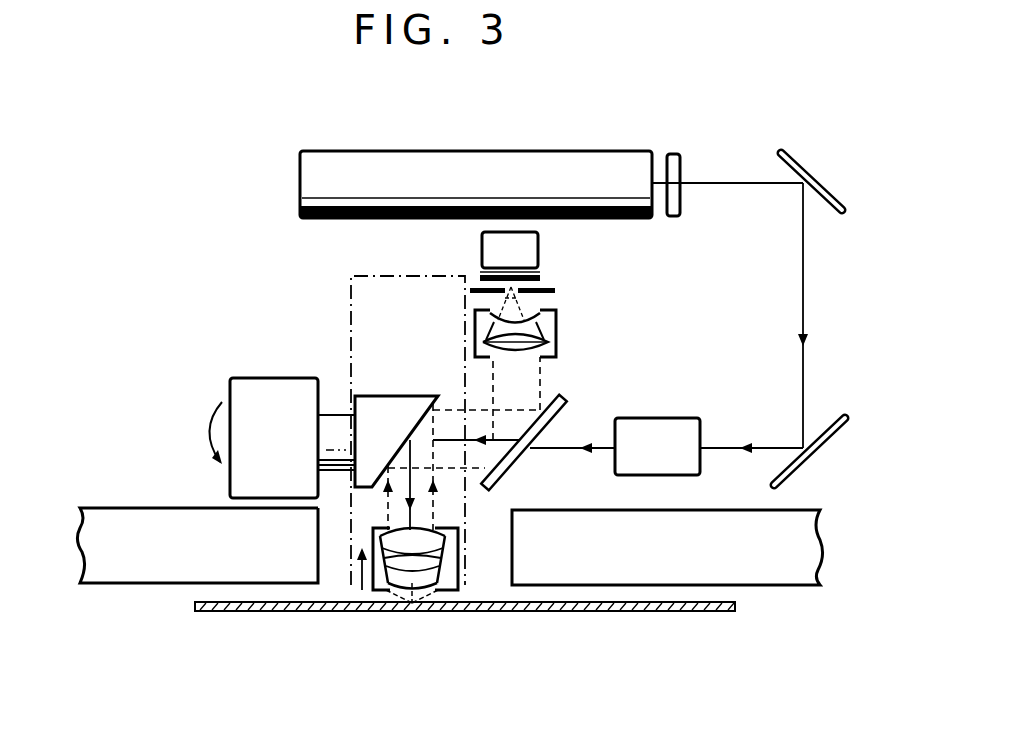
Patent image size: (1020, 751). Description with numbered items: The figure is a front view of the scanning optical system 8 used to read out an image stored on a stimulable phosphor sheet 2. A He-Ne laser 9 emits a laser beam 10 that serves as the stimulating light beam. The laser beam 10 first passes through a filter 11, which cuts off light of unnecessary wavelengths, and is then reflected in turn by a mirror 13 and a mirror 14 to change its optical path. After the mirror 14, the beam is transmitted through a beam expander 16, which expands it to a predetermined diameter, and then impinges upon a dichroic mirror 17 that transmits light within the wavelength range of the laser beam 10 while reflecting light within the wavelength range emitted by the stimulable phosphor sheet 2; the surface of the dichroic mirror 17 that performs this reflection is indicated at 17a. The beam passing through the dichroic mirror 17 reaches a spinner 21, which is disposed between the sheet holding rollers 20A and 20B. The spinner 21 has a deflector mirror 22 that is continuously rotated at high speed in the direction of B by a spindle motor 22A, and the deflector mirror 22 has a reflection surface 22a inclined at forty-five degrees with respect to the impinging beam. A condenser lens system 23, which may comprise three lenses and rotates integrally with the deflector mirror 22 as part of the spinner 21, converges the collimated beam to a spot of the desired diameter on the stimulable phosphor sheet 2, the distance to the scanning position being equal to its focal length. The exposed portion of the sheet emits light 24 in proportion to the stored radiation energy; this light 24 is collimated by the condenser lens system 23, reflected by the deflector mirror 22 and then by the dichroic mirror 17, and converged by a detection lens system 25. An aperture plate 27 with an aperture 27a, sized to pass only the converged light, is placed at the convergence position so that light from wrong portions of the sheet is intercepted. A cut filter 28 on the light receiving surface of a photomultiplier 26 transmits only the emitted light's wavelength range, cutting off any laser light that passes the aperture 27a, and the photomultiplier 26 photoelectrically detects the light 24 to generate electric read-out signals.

The stimulable phosphor sheet 2 is at (362, 613).
The scanning optical system 8 is at (272, 212).
The He-Ne laser 9 is at (477, 160).
The laser beam 10 is at (718, 181).
The filter 11 is at (675, 152).
The mirror 13 is at (806, 170).
The mirror 14 is at (824, 420).
The beam expander 16 is at (681, 418).
The dichroic mirror 17 is at (556, 400).
The reflecting surface of beam splitter 17a is at (556, 430).
The sheet holding roller 20A is at (120, 522).
The sheet holding roller 20B is at (776, 586).
The spinner 21 is at (320, 326).
The deflector mirror 22 is at (370, 400).
The reflection surface 22a is at (423, 404).
The spindle motor 22A is at (250, 395).
The condenser lens system 23 is at (452, 553).
The light 24 is at (420, 615).
The detection lens system 25 is at (565, 322).
The photomultiplier 26 is at (522, 230).
The aperture plate 27 is at (557, 291).
The aperture 27a is at (480, 288).
The cut filter 28 is at (541, 276).
The direction of rotation B is at (204, 424).